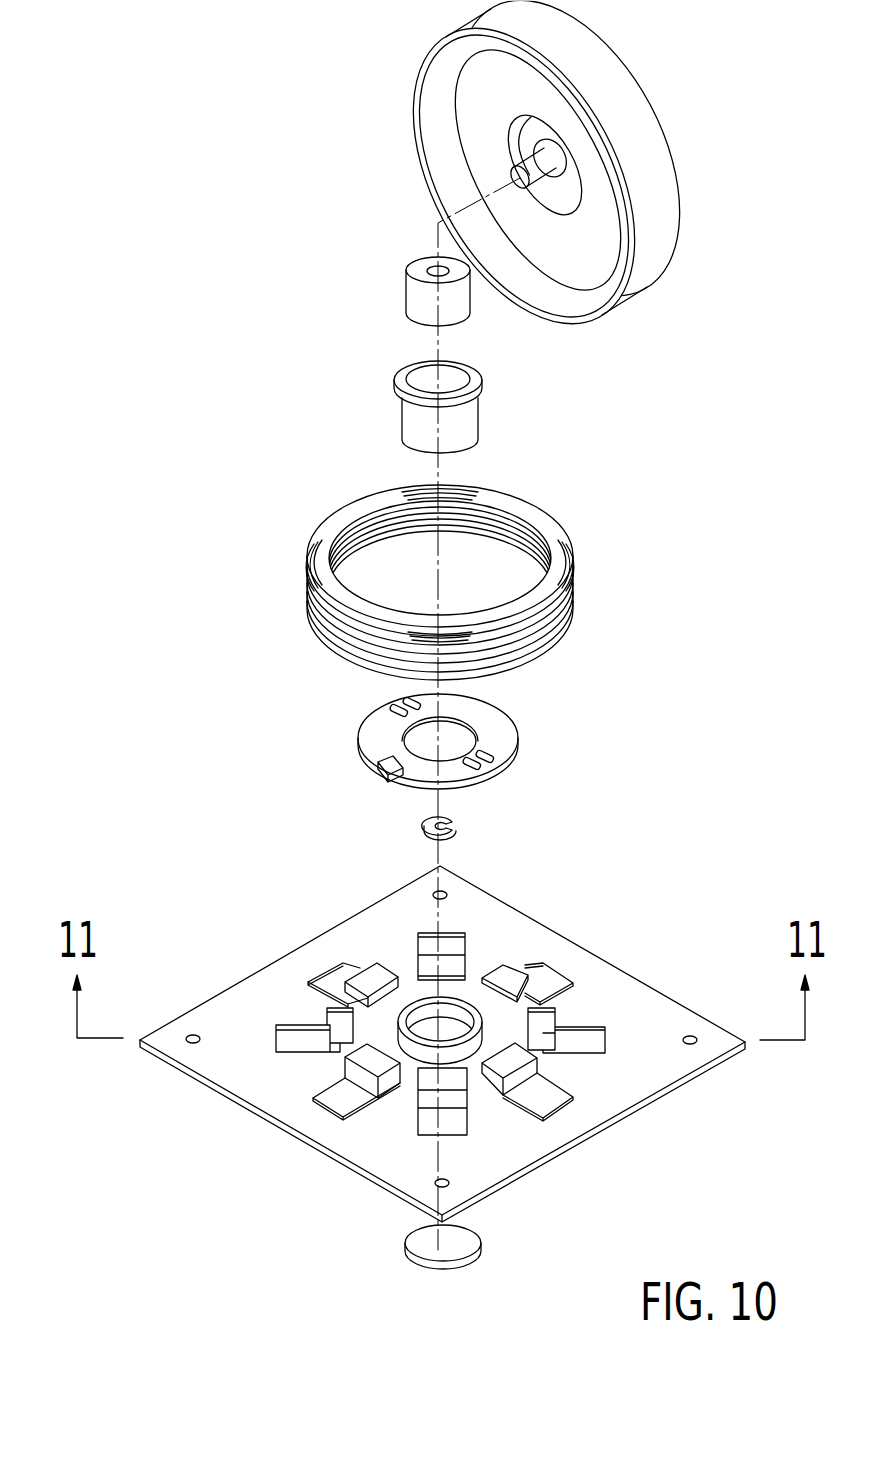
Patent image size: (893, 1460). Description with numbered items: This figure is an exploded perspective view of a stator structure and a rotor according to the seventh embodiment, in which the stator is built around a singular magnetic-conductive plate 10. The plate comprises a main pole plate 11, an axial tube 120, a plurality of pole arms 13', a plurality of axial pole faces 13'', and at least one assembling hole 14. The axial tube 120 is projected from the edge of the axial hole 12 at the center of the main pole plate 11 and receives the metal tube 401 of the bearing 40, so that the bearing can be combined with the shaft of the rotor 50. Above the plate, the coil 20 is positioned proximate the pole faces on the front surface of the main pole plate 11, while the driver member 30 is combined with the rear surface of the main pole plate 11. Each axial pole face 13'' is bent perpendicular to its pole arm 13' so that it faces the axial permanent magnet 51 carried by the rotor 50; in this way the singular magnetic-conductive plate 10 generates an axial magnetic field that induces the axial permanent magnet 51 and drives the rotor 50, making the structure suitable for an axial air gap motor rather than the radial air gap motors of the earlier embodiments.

The singular magnetic-conductive plate 10 is at (613, 937).
The main pole plate 11 is at (373, 1032).
The axial hole 12 is at (455, 1027).
The axial tube 120 is at (372, 972).
The pole arm 13' is at (445, 1058).
The axial pole face 13'' is at (406, 1058).
The assembling hole 14 is at (697, 1040).
The coil 20 is at (547, 527).
The driver member 30 is at (512, 733).
The bearing 40 is at (462, 308).
The metal tube 401 is at (468, 427).
The rotor 50 is at (650, 162).
The axial permanent magnet 51 is at (473, 133).